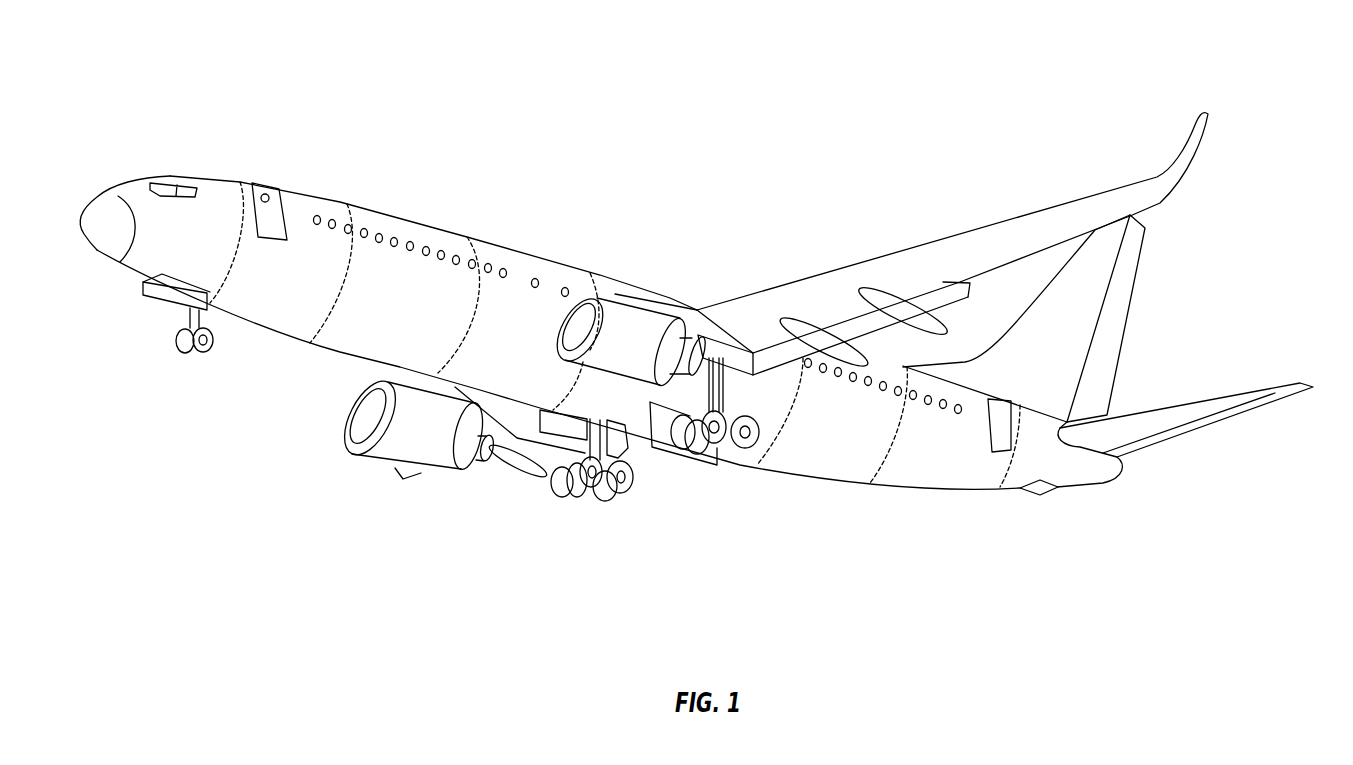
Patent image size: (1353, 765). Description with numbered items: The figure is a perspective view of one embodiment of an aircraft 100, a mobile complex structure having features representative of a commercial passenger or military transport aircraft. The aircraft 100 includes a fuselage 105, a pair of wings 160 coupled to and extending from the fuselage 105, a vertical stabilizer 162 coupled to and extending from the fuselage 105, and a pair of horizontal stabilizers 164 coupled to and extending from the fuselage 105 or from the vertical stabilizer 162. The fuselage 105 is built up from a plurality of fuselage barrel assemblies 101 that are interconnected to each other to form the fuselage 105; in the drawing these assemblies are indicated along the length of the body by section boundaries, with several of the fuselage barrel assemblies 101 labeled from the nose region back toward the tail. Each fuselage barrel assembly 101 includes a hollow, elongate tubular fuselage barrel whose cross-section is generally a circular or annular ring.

The aircraft 100 is at (601, 263).
The fuselage barrel assembly 101 is at (613, 276).
The fuselage 105 is at (580, 286).
The wing 160 is at (842, 290).
The vertical stabilizer 162 is at (1078, 300).
The horizontal stabilizer 164 is at (1157, 418).